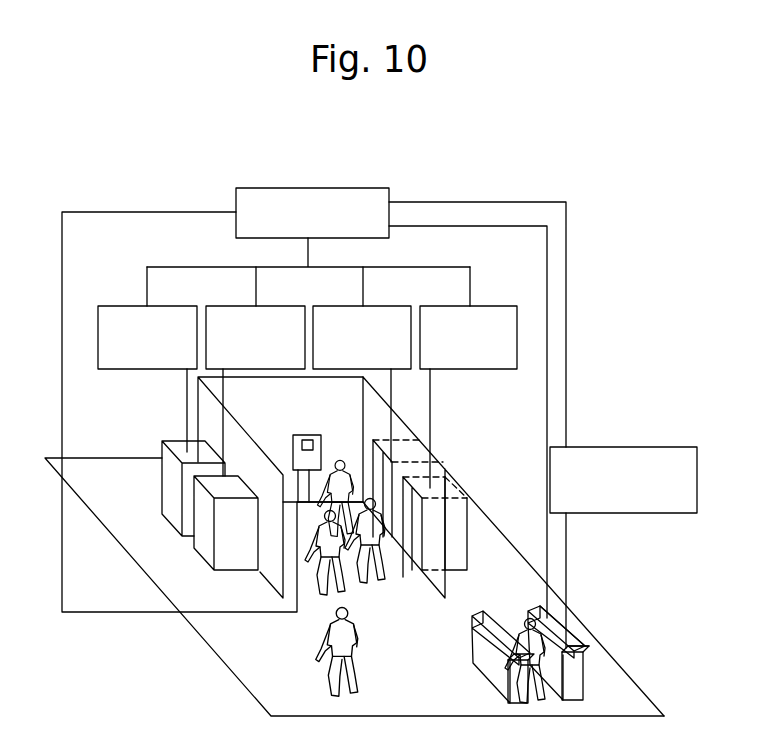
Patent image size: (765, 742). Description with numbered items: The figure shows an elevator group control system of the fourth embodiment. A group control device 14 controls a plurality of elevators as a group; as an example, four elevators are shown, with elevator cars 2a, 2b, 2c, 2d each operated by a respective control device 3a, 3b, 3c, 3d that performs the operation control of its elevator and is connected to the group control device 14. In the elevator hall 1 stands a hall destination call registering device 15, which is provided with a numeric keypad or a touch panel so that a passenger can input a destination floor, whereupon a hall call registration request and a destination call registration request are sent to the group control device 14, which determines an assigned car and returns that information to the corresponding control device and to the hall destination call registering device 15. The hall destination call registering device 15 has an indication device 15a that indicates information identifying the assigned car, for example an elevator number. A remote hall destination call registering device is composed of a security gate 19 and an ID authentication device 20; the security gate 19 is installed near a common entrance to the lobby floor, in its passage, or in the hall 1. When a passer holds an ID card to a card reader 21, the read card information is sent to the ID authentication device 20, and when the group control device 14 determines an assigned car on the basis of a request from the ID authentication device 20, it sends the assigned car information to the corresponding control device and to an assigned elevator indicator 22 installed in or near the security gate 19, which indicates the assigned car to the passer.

The elevator hall 1 is at (315, 612).
The elevator car 2a is at (166, 441).
The elevator car 2b is at (205, 560).
The elevator car 2c is at (372, 440).
The elevator car 2d is at (468, 510).
The control device 3a is at (122, 306).
The control device 3b is at (225, 306).
The control device 3c is at (338, 306).
The control device 3d is at (440, 306).
The group control device 14 is at (280, 187).
The hall destination call registering device 15 is at (292, 442).
The indication device 15a is at (321, 406).
The security gate 19 is at (478, 612).
The ID authentication device 20 is at (637, 446).
The card reader 21 is at (580, 647).
The assigned elevator indicator 22 is at (550, 618).